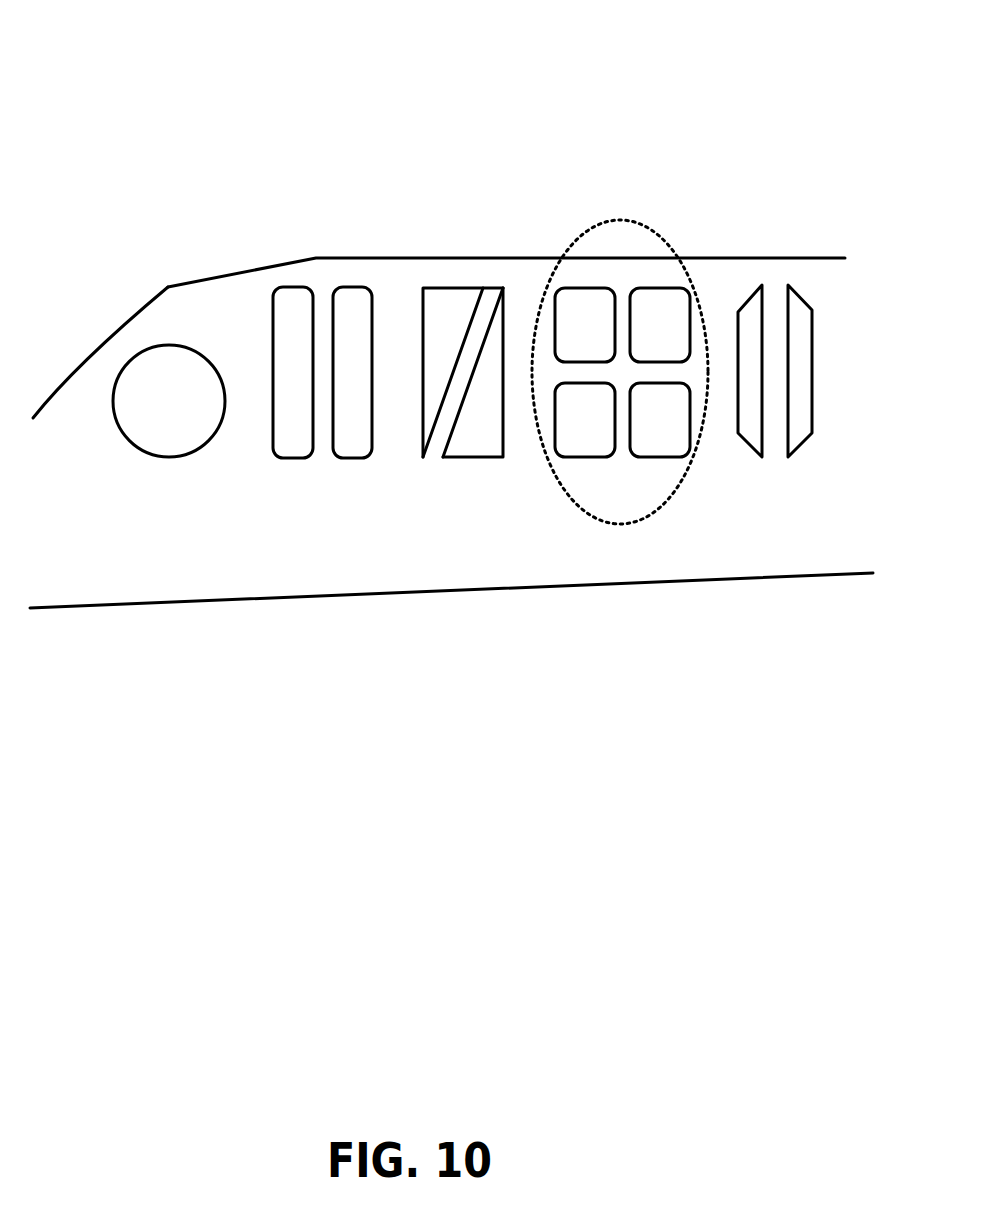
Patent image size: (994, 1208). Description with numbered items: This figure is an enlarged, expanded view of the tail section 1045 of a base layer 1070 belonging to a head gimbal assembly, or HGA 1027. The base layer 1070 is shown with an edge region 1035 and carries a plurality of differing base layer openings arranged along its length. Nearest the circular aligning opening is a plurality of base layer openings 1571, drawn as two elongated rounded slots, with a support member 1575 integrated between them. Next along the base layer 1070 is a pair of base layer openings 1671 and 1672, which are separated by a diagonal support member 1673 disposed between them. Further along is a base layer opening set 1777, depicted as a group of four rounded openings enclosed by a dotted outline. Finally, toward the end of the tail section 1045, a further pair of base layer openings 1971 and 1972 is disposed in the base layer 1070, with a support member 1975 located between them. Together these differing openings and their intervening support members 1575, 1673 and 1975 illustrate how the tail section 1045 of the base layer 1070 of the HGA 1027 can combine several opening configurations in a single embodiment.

The tail section 1045 is at (90, 44).
The top edge 1035 is at (203, 302).
The base layer 1070 is at (127, 343).
The HGA 1027 is at (182, 420).
The base layer openings 1571 is at (348, 427).
The support member 1575 is at (320, 323).
The base layer opening 1671 is at (432, 375).
The base layer opening 1672 is at (480, 420).
The support member 1673 is at (492, 300).
The base layer opening set 1777 is at (618, 220).
The base layer opening 1971 is at (751, 417).
The base layer opening 1972 is at (797, 415).
The support member 1975 is at (774, 305).